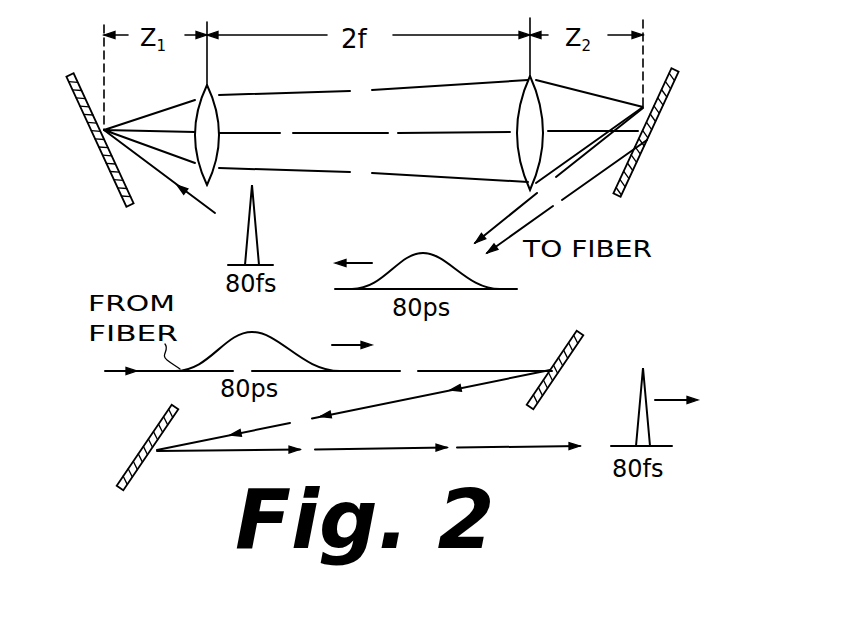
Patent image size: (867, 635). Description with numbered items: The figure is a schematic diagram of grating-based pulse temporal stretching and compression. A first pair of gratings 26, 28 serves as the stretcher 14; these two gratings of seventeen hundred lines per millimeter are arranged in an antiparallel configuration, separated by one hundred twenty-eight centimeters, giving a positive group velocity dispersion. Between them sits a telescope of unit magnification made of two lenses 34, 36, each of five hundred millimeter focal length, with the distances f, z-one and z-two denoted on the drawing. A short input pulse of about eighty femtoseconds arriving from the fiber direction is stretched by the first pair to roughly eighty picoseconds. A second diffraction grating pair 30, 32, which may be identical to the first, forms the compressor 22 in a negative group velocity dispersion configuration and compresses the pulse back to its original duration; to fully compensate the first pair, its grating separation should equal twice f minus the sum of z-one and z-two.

The stretcher 14 is at (632, 191).
The compressor 22 is at (553, 395).
The grating 26 is at (101, 151).
The grating 28 is at (678, 75).
The diffraction grating 30 is at (578, 337).
The diffraction grating 32 is at (140, 476).
The lens 34 is at (212, 88).
The lens 36 is at (530, 78).